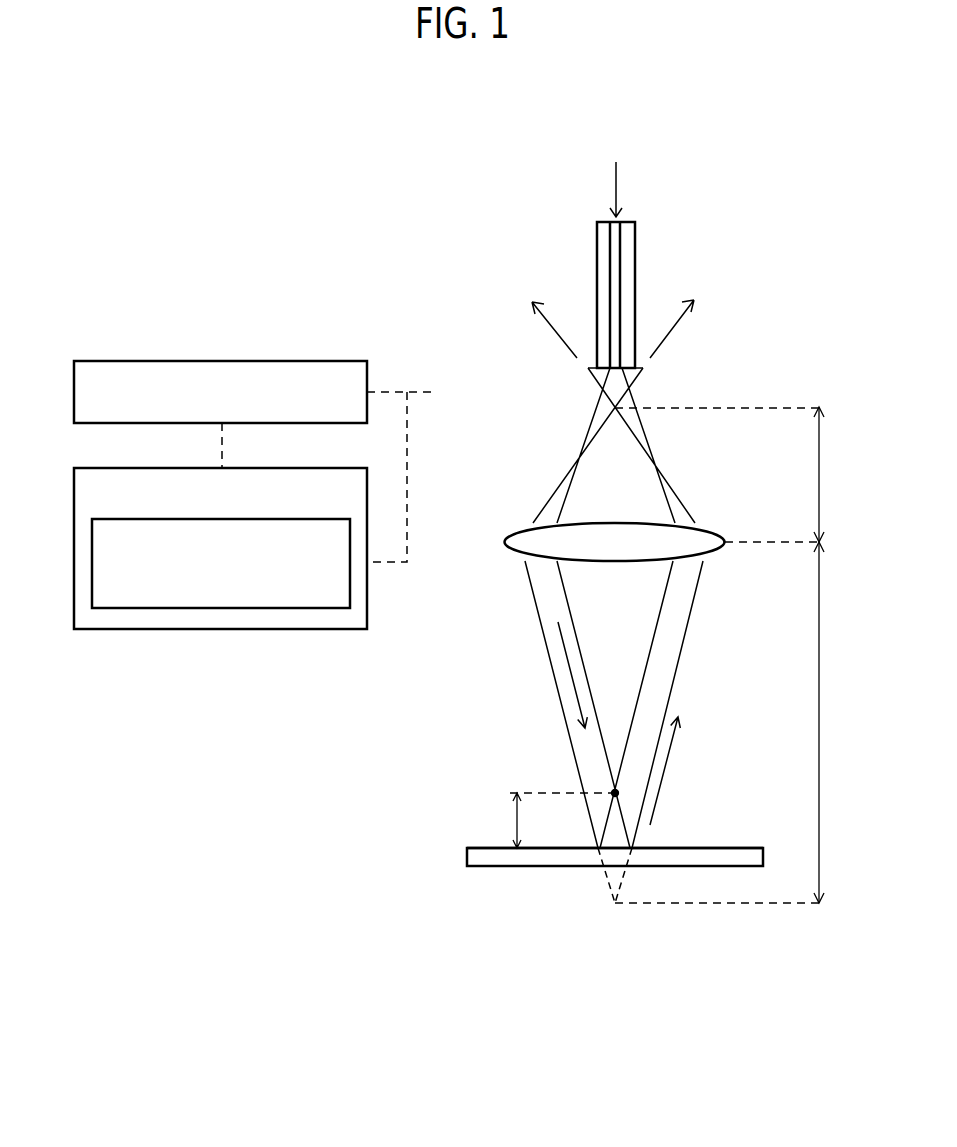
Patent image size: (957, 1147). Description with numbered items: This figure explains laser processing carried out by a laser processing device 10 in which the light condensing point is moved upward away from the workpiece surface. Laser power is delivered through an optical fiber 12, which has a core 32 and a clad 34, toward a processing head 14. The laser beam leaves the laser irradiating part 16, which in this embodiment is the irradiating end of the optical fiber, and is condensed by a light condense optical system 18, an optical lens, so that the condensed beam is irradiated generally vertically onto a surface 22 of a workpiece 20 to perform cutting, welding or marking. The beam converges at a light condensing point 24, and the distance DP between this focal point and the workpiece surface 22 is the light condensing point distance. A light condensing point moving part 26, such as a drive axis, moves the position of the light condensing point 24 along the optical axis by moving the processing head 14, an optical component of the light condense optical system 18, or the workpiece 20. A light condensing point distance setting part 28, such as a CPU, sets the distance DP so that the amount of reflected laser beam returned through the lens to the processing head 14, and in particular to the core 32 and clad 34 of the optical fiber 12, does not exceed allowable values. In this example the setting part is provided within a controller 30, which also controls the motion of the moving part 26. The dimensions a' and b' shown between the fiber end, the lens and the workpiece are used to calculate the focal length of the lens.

The laser processing device 10 is at (315, 210).
The optical fiber 12 is at (616, 271).
The processing head 14 is at (497, 222).
The laser irradiating part 16 is at (597, 358).
The light condense optical system 18 is at (527, 517).
The workpiece 20 is at (615, 863).
The surface of workpiece 22 is at (732, 848).
The light condensing point 24 is at (612, 791).
The light condensing point moving part 26 is at (137, 360).
The light condensing point distance setting part 28 is at (323, 608).
The controller 30 is at (220, 609).
The core 32 is at (615, 243).
The clad 34 is at (635, 303).